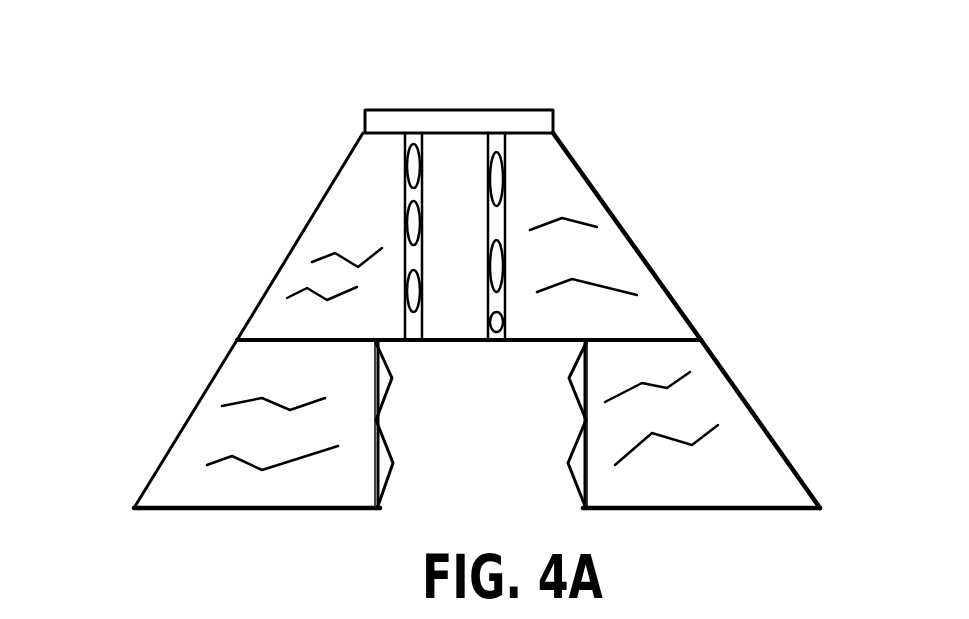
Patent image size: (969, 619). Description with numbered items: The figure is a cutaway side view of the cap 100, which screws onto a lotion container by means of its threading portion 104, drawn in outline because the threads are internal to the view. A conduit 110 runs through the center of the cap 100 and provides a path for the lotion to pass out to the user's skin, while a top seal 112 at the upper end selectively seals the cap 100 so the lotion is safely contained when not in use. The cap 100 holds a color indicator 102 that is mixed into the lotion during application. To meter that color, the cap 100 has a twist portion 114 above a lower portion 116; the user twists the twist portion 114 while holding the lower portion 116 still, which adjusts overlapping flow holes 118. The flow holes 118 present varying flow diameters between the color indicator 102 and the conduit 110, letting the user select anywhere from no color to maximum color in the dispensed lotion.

The cap 100 is at (217, 375).
The color indicator 102 is at (330, 253).
The threading portion 104 is at (573, 478).
The conduit 110 is at (470, 223).
The top seal 112 is at (452, 115).
The twist portion 114 is at (664, 260).
The lower portion 116 is at (746, 372).
The flow holes 118 is at (412, 195).